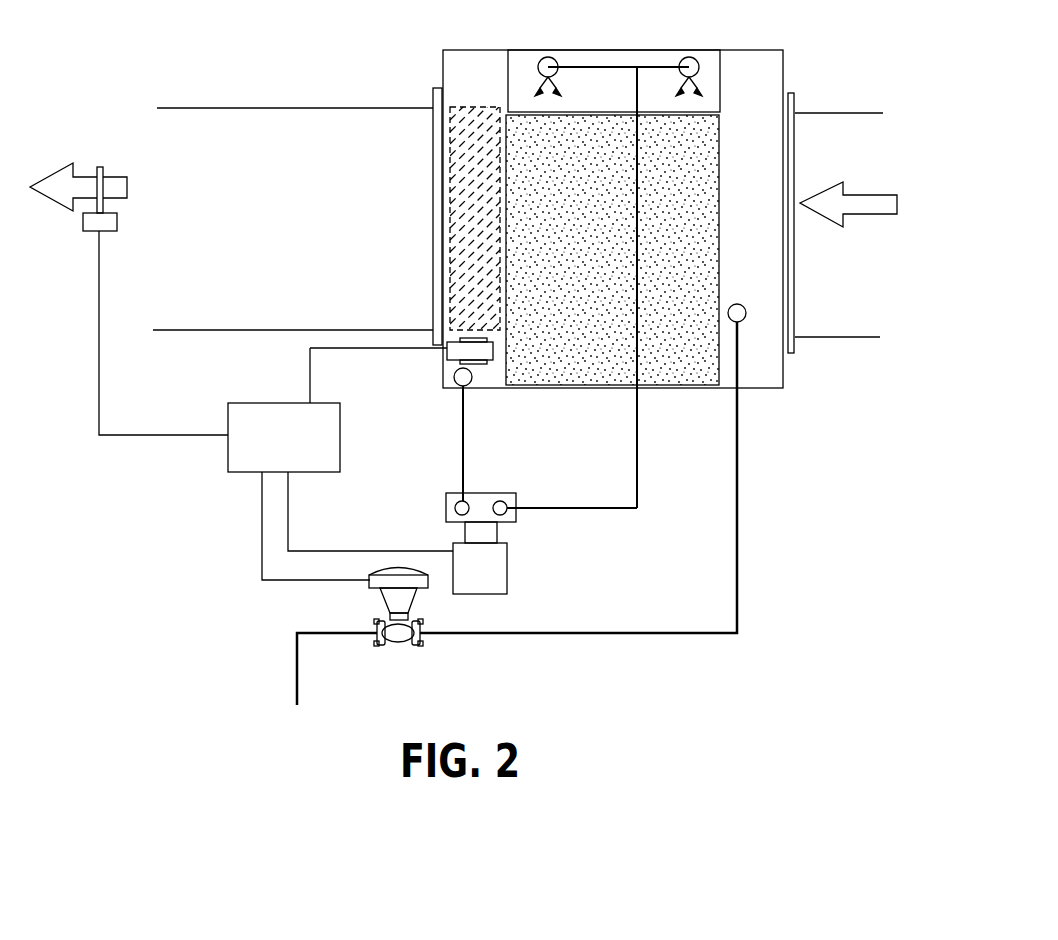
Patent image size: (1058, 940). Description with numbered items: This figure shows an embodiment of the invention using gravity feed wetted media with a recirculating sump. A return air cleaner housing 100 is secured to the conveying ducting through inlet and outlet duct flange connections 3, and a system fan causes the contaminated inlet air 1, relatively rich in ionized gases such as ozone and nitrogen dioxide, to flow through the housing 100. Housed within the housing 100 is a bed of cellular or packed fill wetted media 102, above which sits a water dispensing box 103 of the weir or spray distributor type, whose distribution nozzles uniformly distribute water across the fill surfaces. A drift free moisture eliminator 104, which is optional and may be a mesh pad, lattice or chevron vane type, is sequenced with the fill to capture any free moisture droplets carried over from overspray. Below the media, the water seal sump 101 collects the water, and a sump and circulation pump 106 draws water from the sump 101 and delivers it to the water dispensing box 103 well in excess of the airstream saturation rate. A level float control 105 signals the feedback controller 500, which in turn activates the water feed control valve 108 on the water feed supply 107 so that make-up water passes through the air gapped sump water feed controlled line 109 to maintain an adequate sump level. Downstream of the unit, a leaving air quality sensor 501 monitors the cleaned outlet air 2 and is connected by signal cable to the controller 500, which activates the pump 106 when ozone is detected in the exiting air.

The contaminated inlet air 1 is at (868, 215).
The cleaned outlet air 2 is at (80, 176).
The duct flange connection 3 is at (437, 105).
The return air cleaner housing 100 is at (648, 42).
The water seal sump 101 is at (762, 375).
The wetted media 102 is at (553, 217).
The water dispensing box 103 is at (520, 73).
The drift free moisture eliminator 104 is at (450, 225).
The level float control 105 is at (455, 345).
The sump and circulation pump 106 is at (507, 567).
The water feed supply 107 is at (295, 660).
The water feed control valve 108 is at (398, 647).
The air gapped sump water feed controlled line 109 is at (736, 600).
The feedback controller 500 is at (299, 452).
The leaving air quality sensor 501 is at (100, 272).